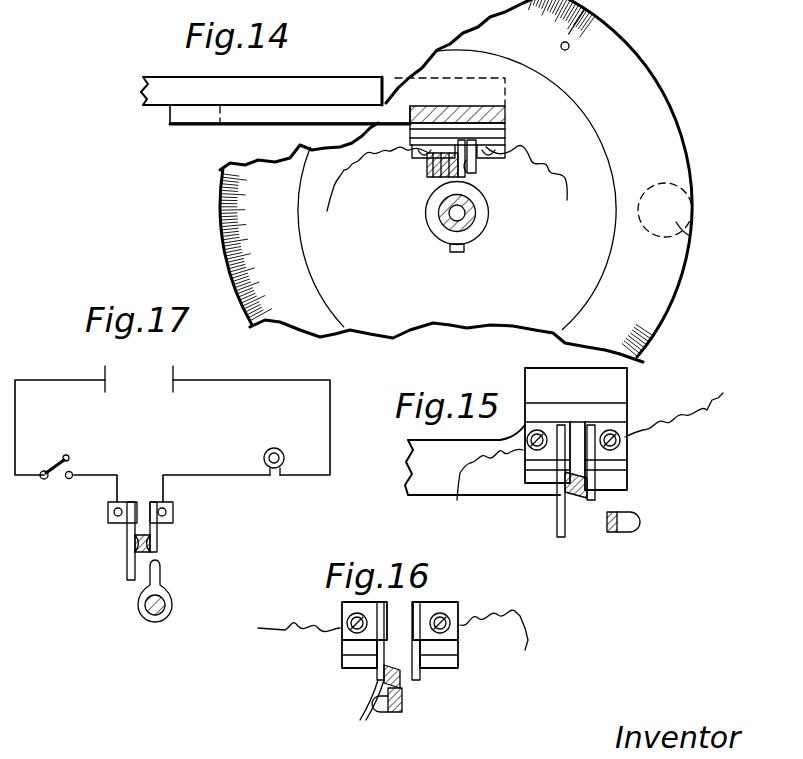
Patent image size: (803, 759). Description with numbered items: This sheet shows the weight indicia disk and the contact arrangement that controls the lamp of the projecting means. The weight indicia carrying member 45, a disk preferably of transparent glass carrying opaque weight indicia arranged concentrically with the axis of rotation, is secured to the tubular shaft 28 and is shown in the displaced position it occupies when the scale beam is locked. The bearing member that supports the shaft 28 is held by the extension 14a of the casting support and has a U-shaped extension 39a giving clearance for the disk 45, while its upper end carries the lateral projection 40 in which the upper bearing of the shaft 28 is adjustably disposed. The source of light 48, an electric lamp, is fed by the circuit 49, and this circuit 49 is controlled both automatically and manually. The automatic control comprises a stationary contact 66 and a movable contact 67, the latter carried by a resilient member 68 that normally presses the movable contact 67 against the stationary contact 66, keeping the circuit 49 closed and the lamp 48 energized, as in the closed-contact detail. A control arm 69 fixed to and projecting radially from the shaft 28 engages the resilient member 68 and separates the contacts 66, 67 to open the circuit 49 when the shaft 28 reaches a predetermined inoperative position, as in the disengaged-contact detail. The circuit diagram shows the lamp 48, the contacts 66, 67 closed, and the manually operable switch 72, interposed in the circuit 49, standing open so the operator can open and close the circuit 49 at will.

In FIG. 14, the extension of support 14a is at (143, 86).
In FIG. 14, the U-shaped extension 39a is at (187, 120).
In FIG. 15, the U-shaped extension 39a is at (410, 475).
In FIG. 15, the lateral projection 40 is at (612, 383).
In FIG. 14, the weight indicia carrying member 45 is at (674, 136).
In FIG. 14, the source of light 48 is at (690, 238).
In FIG. 17, the source of light 48 is at (265, 452).
In FIG. 14, the circuit 49 is at (553, 146).
In FIG. 17, the circuit 49 is at (30, 381).
In FIG. 15, the circuit 49 is at (604, 454).
In FIG. 16, the circuit 49 is at (280, 632).
In FIG. 14, the stationary contact 66 is at (475, 166).
In FIG. 17, the stationary contact 66 is at (158, 541).
In FIG. 15, the stationary contact 66 is at (590, 510).
In FIG. 16, the stationary contact 66 is at (410, 680).
In FIG. 17, the movable contact 67 is at (128, 541).
In FIG. 15, the movable contact 67 is at (575, 488).
In FIG. 16, the movable contact 67 is at (376, 672).
In FIG. 14, the resilient member 68 is at (430, 170).
In FIG. 17, the resilient member 68 is at (128, 578).
In FIG. 15, the resilient member 68 is at (563, 540).
In FIG. 16, the resilient member 68 is at (364, 716).
In FIG. 14, the control arm 69 is at (470, 190).
In FIG. 17, the control arm 69 is at (166, 585).
In FIG. 15, the control arm 69 is at (637, 521).
In FIG. 16, the control arm 69 is at (395, 713).
In FIG. 14, the shaft 28 is at (447, 221).
In FIG. 17, the shaft 28 is at (152, 620).
In FIG. 17, the manually operable switch 72 is at (52, 462).